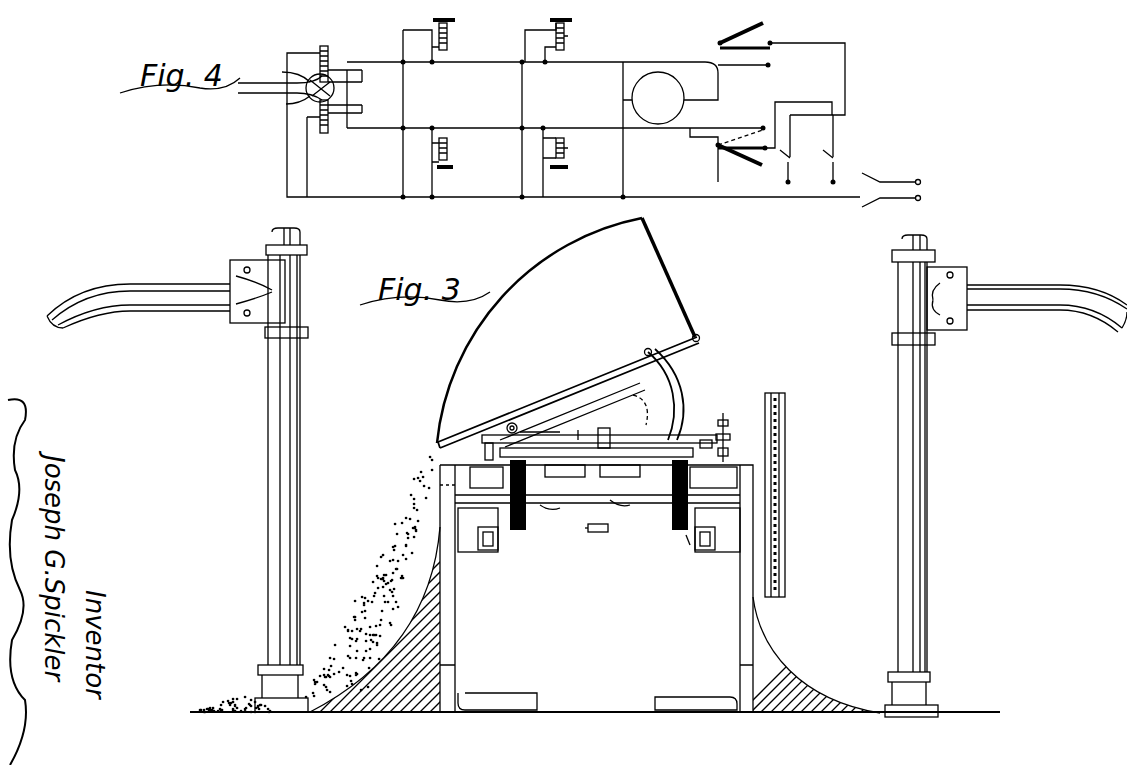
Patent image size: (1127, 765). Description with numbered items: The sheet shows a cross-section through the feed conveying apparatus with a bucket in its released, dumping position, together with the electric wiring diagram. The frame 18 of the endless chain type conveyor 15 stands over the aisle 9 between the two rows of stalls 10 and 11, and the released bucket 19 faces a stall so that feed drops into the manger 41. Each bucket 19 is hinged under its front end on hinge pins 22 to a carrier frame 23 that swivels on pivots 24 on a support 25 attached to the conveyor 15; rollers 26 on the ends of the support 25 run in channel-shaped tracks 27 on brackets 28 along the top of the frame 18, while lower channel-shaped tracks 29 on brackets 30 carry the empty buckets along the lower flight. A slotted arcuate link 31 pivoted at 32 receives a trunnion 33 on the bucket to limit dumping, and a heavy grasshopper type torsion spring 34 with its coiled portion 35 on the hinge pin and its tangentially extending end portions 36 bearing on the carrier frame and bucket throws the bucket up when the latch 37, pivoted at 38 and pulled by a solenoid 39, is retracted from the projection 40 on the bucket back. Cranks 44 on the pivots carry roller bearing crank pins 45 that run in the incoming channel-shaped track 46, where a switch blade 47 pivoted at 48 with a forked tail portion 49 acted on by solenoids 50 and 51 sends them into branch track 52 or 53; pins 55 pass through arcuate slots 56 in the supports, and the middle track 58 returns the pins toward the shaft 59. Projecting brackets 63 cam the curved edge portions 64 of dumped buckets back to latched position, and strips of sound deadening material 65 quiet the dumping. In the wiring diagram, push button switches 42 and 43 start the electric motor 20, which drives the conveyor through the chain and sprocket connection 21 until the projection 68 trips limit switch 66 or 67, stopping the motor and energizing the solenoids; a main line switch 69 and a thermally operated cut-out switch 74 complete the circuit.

In FIG. 3, the aisle 9 is at (640, 712).
In FIG. 3, the stalls 10 is at (258, 460).
In FIG. 3, the stalls 11 is at (930, 438).
In FIG. 3, the endless chain type conveyor 15 is at (518, 538).
In FIG. 3, the frame 18 is at (458, 590).
In FIG. 3, the buckets 19 is at (660, 278).
In FIG. 4, the electric motor 20 is at (668, 73).
In FIG. 3, the chain and sprocket connection 21 is at (780, 605).
In FIG. 3, the hinge pins 22 is at (565, 425).
In FIG. 3, the carrier frames 23 is at (702, 425).
In FIG. 3, the pivots 24 is at (606, 428).
In FIG. 3, the supports 25 is at (597, 489).
In FIG. 3, the rollers 26 is at (484, 452).
In FIG. 3, the channel-shaped tracks 27 is at (672, 485).
In FIG. 3, the brackets 28 is at (713, 481).
In FIG. 3, the channel-shaped tracks 29 is at (498, 550).
In FIG. 3, the brackets 30 is at (488, 527).
In FIG. 3, the slotted arcuate links 31 is at (672, 380).
In FIG. 3, the pivot 32 is at (599, 428).
In FIG. 3, the trunnions 33 is at (642, 348).
In FIG. 3, the grasshopper type torsion springs 34 is at (556, 395).
In FIG. 3, the coiled portions 35 is at (528, 432).
In FIG. 3, the tangentially extending end portions 36 is at (580, 430).
In FIG. 4, the latches 37 is at (586, 23).
In FIG. 3, the latches 37 is at (728, 424).
In FIG. 3, the pivot 38 is at (730, 438).
In FIG. 4, the solenoids 39 is at (565, 40).
In FIG. 3, the solenoids 39 is at (728, 452).
In FIG. 3, the projections 40 is at (700, 338).
In FIG. 3, the manger 41 is at (380, 665).
In FIG. 4, the push button switch 42 is at (838, 153).
In FIG. 4, the push button switch 43 is at (806, 150).
In FIG. 3, the cranks 44 is at (580, 470).
In FIG. 3, the roller bearing crank pins 45 is at (560, 504).
In FIG. 4, the channel-shaped track 46 is at (250, 97).
In FIG. 4, the switch blade 47 is at (302, 78).
In FIG. 4, the pivot 48 is at (308, 110).
In FIG. 4, the forked tail portion 49 is at (327, 75).
In FIG. 4, the solenoid 50 is at (320, 52).
In FIG. 4, the solenoid 51 is at (322, 133).
In FIG. 4, the branch track 52 is at (362, 108).
In FIG. 4, the branch track 53 is at (362, 72).
In FIG. 3, the pins 55 is at (620, 500).
In FIG. 3, the arcuate slots 56 is at (632, 457).
In FIG. 3, the middle track 58 is at (586, 528).
In FIG. 3, the shaft 59 is at (686, 540).
In FIG. 3, the projecting brackets 63 is at (525, 693).
In FIG. 3, the curved edge portions 64 is at (502, 318).
In FIG. 3, the sound deadening material 65 is at (505, 425).
In FIG. 4, the limit switch 66 is at (738, 138).
In FIG. 4, the limit switch 67 is at (765, 28).
In FIG. 4, the projection 68 is at (722, 158).
In FIG. 3, the projection 68 is at (633, 532).
In FIG. 4, the main line switch 69 is at (872, 178).
In FIG. 4, the thermally operated time delay cut-out switch 74 is at (870, 208).